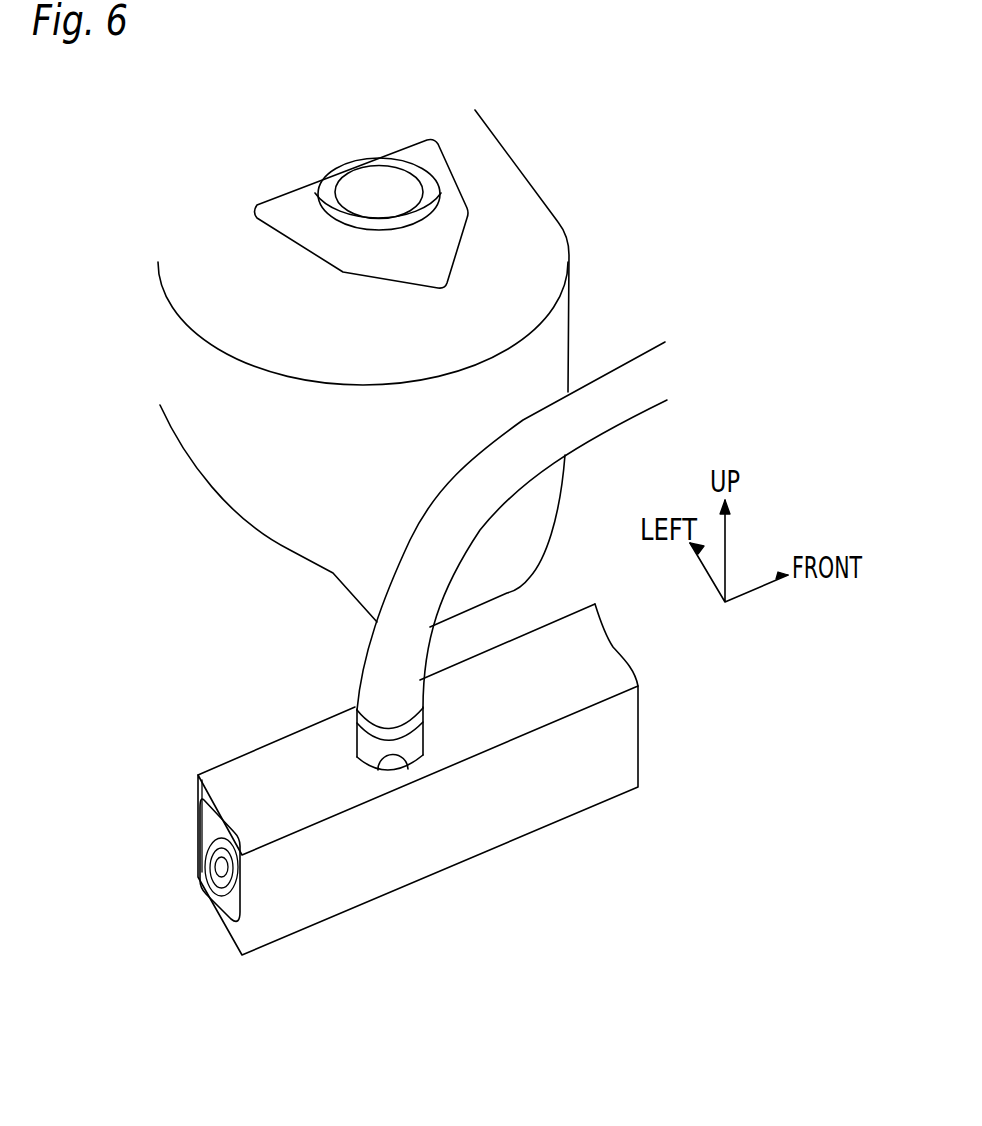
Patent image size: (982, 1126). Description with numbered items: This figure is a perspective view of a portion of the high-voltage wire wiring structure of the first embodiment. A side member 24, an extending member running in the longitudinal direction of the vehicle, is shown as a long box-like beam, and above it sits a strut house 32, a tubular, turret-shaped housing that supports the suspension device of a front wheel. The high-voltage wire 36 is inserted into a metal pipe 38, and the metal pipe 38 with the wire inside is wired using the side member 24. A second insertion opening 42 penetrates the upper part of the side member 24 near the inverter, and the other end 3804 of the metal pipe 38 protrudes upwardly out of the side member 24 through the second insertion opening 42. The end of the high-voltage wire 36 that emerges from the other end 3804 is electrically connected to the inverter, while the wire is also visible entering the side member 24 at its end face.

The side member 24 is at (503, 803).
The strut house 32 is at (503, 178).
The high-voltage wire 36 is at (541, 410).
The metal pipe 38 is at (202, 838).
The other end of the metal pipe 3804 is at (357, 736).
The second insertion opening 42 is at (406, 764).